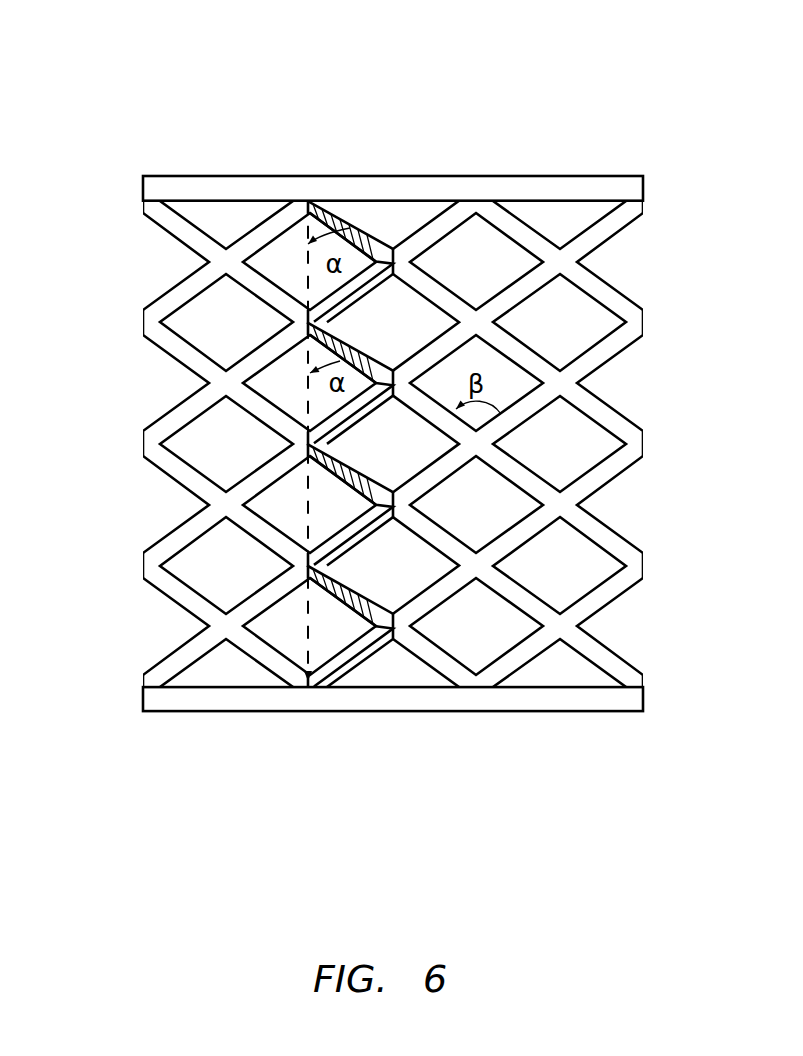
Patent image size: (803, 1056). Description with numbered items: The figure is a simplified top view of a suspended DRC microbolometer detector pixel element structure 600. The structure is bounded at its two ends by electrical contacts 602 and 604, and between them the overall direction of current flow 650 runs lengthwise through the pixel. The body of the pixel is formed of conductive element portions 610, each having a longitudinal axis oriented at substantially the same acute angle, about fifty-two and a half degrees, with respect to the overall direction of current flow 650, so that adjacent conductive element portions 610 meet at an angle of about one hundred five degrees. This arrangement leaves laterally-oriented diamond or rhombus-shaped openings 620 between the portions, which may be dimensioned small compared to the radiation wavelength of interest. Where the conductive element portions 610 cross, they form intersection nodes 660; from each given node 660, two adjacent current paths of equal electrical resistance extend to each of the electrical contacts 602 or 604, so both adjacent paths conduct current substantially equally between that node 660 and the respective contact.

The microbolometer detector pixel element structure 600 is at (653, 60).
The electrical contact 602 is at (555, 176).
The electrical contact 604 is at (557, 712).
The conductive element portions 610 is at (607, 352).
The diamond or rhombus-shaped openings 620 is at (223, 568).
The overall direction of current flow 650 is at (306, 205).
The intersection node 660 is at (473, 567).